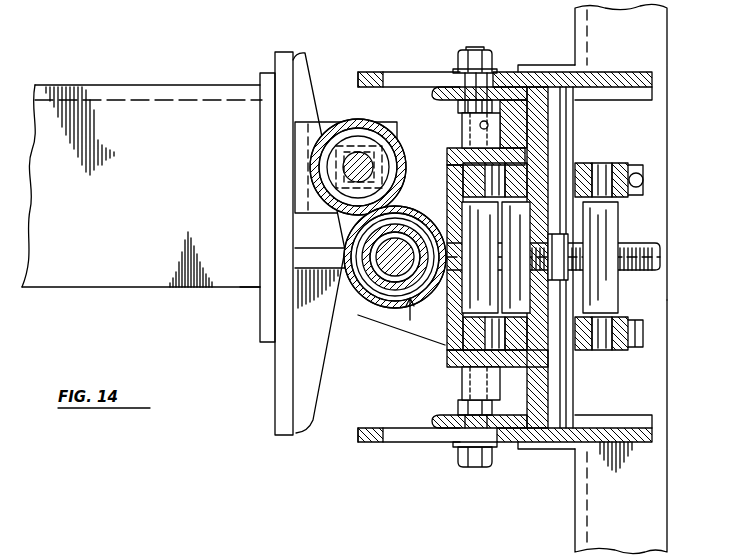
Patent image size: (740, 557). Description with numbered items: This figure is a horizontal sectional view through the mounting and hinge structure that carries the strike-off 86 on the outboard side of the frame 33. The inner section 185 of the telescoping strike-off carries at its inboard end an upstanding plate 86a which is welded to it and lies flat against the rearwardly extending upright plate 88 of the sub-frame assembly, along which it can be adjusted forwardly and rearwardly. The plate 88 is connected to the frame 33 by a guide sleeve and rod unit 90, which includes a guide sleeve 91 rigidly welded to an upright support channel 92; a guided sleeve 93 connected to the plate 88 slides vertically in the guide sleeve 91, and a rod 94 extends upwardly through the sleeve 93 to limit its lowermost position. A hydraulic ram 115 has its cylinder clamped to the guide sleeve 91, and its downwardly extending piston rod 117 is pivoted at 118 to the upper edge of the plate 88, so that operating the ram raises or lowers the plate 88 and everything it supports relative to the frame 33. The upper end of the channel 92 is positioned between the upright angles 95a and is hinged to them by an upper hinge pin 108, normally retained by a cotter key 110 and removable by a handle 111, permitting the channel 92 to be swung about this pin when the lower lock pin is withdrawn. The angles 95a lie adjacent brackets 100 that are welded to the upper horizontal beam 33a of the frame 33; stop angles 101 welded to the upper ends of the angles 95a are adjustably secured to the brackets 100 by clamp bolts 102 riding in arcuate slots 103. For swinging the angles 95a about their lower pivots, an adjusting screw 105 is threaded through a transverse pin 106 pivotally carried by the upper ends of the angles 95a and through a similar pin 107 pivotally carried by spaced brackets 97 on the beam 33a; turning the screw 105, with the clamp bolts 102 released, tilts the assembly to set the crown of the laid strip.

The frame 33 is at (668, 32).
The upper horizontal beam 33a is at (655, 494).
The strike-off 86 is at (165, 88).
The upstanding plate 86a is at (262, 332).
The upright plate 88 is at (283, 428).
The guide sleeve and rod unit 90 is at (411, 318).
The guide sleeve 91 is at (405, 208).
The upright support channel 92 is at (443, 340).
The guided sleeve 93 is at (389, 300).
The rod 94 is at (368, 292).
The upright angles 95a is at (550, 122).
The spaced brackets 97 is at (632, 175).
The brackets 100 is at (527, 75).
The stop angles 101 is at (440, 88).
The clamp bolts 102 is at (478, 46).
The arcuate slots 103 is at (392, 80).
The adjusting screw 105 is at (662, 250).
The transverse pin 106 is at (522, 228).
The transverse pin 107 is at (612, 218).
The upper hinge pin 108 is at (464, 124).
The cotter key 110 is at (503, 98).
The handle 111 is at (466, 378).
The hydraulic ram 115 is at (365, 119).
The piston rod 117 is at (370, 152).
The pivot 118 is at (296, 190).
The inner section 185 is at (244, 288).